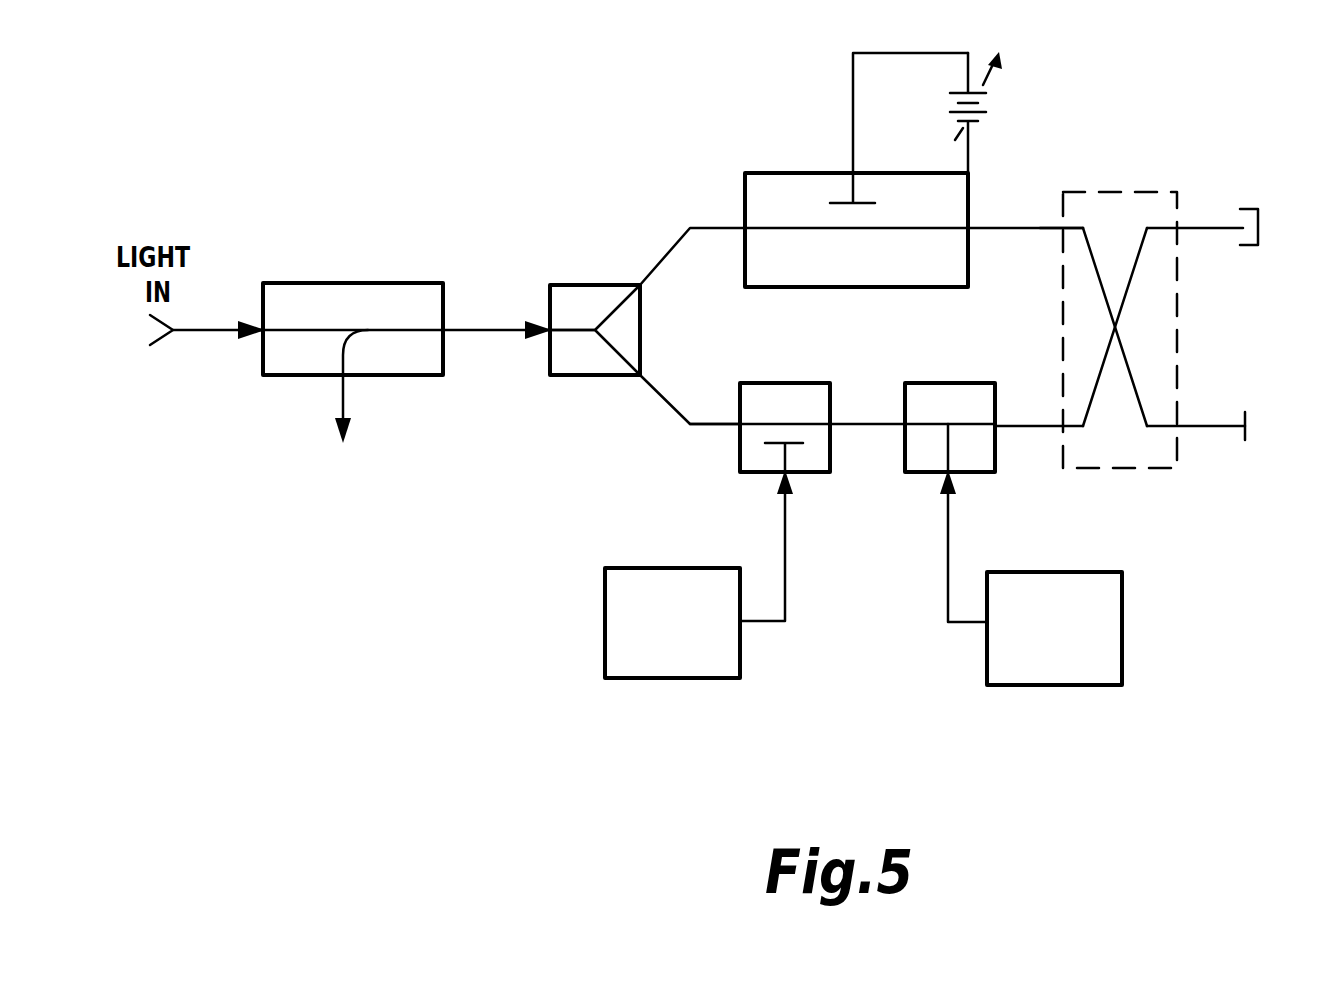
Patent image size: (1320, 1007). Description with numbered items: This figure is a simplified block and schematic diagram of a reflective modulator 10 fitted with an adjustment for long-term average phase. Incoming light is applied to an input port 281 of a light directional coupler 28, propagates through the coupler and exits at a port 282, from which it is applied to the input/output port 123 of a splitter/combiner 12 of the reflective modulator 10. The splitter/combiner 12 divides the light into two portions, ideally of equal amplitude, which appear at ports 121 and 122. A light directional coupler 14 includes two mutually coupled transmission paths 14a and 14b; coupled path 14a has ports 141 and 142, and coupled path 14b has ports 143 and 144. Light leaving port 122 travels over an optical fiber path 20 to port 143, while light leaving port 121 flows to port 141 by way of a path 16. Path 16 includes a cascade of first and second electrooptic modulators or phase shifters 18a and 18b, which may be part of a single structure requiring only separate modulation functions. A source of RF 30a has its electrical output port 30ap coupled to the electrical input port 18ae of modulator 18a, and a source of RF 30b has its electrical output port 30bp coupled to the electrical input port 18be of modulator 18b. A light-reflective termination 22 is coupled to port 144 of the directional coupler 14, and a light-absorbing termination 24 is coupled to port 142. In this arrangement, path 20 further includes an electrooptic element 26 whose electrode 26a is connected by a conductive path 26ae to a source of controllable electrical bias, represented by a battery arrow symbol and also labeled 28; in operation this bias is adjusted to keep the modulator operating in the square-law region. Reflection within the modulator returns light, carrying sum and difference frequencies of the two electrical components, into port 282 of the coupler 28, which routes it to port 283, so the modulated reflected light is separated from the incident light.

The reflective light modulator 10 is at (613, 160).
The splitter/combiner 12 is at (558, 283).
The port of splitter/combiner 121 is at (640, 386).
The port of splitter/combiner 122 is at (637, 283).
The input/output port of splitter/combiner 123 is at (548, 338).
The light directional coupler 14 is at (1120, 192).
The coupled transmission path 14a is at (1100, 375).
The coupled transmission path 14b is at (1100, 292).
The port of directional coupler 141 is at (1063, 426).
The port of directional coupler 142 is at (1178, 228).
The port of directional coupler 143 is at (1063, 228).
The port of directional coupler 144 is at (1177, 428).
The path 16 is at (751, 348).
The electrooptic modulator or phase shifter 18a is at (798, 383).
The electrical input port of modulator 18ae is at (775, 478).
The electrooptic modulator or phase shifter 18b is at (953, 383).
The electrical input port of modulator 18be is at (940, 478).
The optical fiber path 20 is at (1013, 232).
The light-reflective termination 22 is at (1247, 426).
The light-absorbing termination 24 is at (1260, 228).
The electrooptic element 26 is at (860, 287).
The electrode 26a is at (838, 200).
The conductive path 26ae is at (853, 94).
The light directional coupler 28 is at (348, 283).
The input port of light directional coupler 281 is at (260, 336).
The port of light directional coupler 282 is at (448, 328).
The port of light directional coupler 283 is at (347, 380).
The source of RF 30a is at (605, 621).
The electrical output port of RF source 30ap is at (745, 625).
The source of RF 30b is at (1125, 622).
The electrical output port of RF source 30bp is at (985, 625).